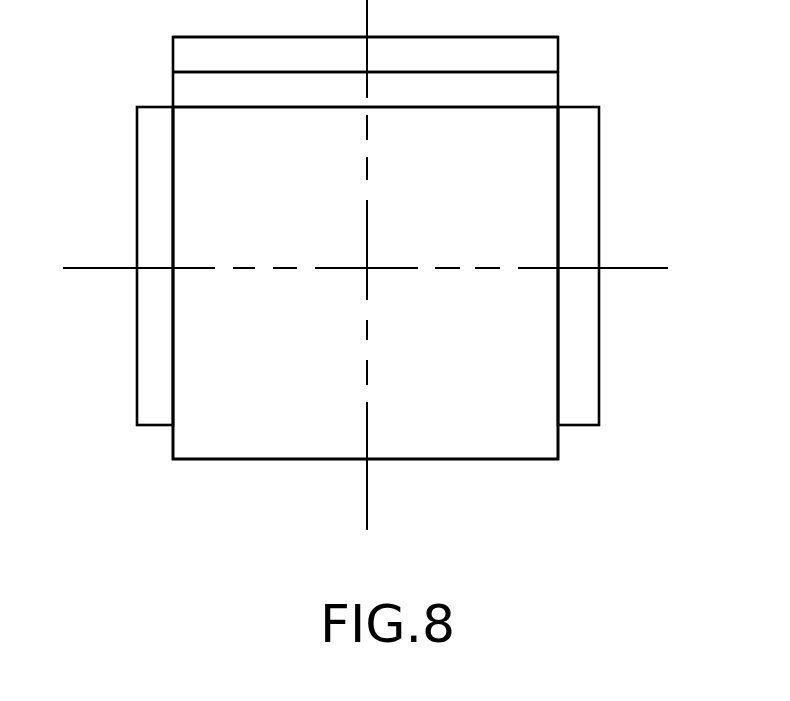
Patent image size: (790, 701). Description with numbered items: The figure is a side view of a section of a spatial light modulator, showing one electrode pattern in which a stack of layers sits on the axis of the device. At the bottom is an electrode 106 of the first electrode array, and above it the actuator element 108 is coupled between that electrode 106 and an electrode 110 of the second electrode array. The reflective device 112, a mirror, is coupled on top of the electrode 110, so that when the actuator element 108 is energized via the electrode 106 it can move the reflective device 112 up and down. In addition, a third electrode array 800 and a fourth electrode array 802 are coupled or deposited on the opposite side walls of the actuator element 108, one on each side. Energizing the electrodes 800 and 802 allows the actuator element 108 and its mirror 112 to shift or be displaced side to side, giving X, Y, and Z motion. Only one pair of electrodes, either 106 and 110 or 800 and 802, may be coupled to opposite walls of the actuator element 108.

The electrode 106 is at (495, 459).
The actuator element 108 is at (517, 148).
The electrode 110 is at (173, 90).
The reflective device 112 is at (173, 47).
The third electrode array 800 is at (137, 203).
The fourth electrode array 802 is at (599, 190).